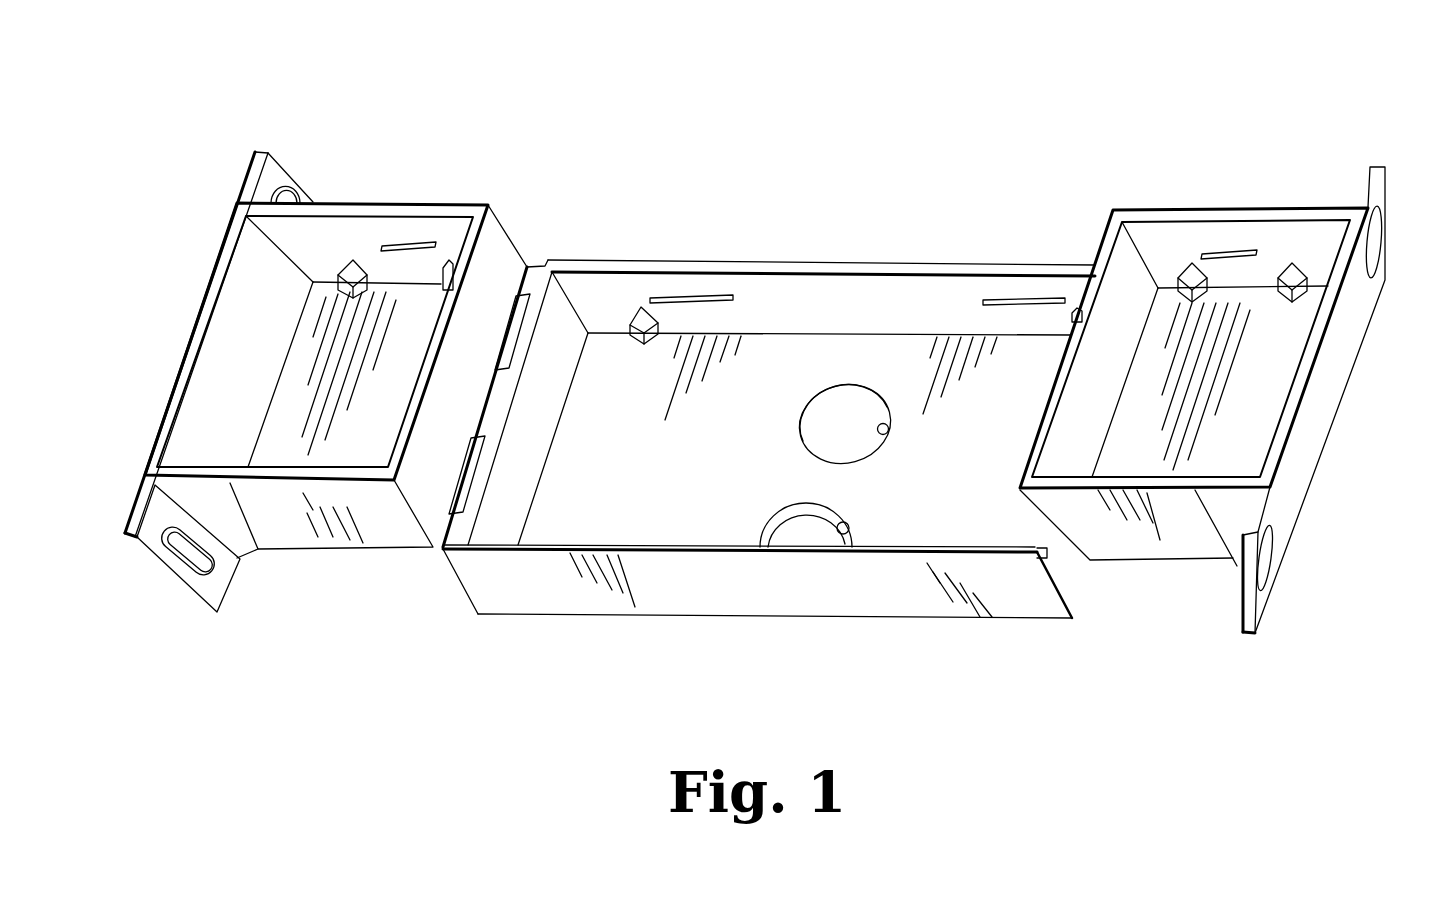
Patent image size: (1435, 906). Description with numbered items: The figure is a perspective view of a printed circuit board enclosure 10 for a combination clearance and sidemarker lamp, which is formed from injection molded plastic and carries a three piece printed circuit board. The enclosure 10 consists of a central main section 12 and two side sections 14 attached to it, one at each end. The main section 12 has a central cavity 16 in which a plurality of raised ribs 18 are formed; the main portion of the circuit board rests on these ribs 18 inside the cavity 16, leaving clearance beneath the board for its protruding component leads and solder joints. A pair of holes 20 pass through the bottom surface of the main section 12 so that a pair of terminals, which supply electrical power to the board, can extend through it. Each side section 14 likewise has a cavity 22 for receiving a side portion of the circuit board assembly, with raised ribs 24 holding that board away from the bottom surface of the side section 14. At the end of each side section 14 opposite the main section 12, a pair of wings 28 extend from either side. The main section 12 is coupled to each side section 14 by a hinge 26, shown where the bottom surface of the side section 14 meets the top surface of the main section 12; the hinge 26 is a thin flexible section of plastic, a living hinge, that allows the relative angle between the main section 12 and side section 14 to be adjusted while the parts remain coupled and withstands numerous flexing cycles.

The enclosure 10 is at (1102, 108).
The main section 12 is at (704, 618).
The side section 14 is at (309, 554).
The central cavity 16 is at (805, 300).
The raised ribs 18 is at (640, 343).
The holes 20 is at (889, 431).
The cavity 22 is at (250, 302).
The raised ribs 24 is at (340, 268).
The hinge 26 is at (497, 405).
The wings 28 is at (268, 152).